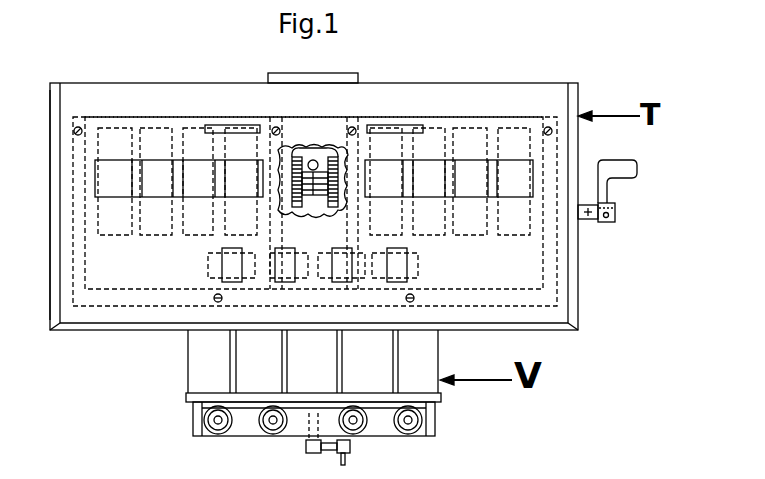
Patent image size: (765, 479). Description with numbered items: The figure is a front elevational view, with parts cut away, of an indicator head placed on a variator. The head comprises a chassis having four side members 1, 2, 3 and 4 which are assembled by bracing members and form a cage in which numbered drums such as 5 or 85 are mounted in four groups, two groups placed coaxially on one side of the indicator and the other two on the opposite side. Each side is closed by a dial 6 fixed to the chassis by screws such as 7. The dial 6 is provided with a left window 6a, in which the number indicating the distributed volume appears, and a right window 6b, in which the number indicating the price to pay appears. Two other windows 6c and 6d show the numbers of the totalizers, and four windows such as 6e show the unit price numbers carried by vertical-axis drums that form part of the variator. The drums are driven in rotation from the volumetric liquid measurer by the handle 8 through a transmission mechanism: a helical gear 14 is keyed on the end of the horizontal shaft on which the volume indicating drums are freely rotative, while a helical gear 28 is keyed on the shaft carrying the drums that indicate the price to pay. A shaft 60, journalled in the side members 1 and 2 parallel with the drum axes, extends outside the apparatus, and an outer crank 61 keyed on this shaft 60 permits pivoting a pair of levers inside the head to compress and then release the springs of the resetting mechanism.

The side member 1 is at (549, 122).
The side member 2 is at (354, 124).
The side member 3 is at (277, 124).
The side member 4 is at (76, 125).
The numbered drum 5 is at (520, 234).
The dial 6 is at (568, 322).
The left window 6a is at (152, 167).
The right window 6b is at (466, 162).
The totalizer window 6c is at (241, 128).
The totalizer window 6d is at (374, 126).
The unit price window 6e is at (222, 267).
The screw 7 is at (76, 137).
The handle 8 is at (346, 457).
The helical gear 14 is at (296, 150).
The helical gear 28 is at (333, 150).
The shaft 60 is at (586, 211).
The outer crank 61 is at (628, 176).
The numbered drum 85 is at (476, 234).